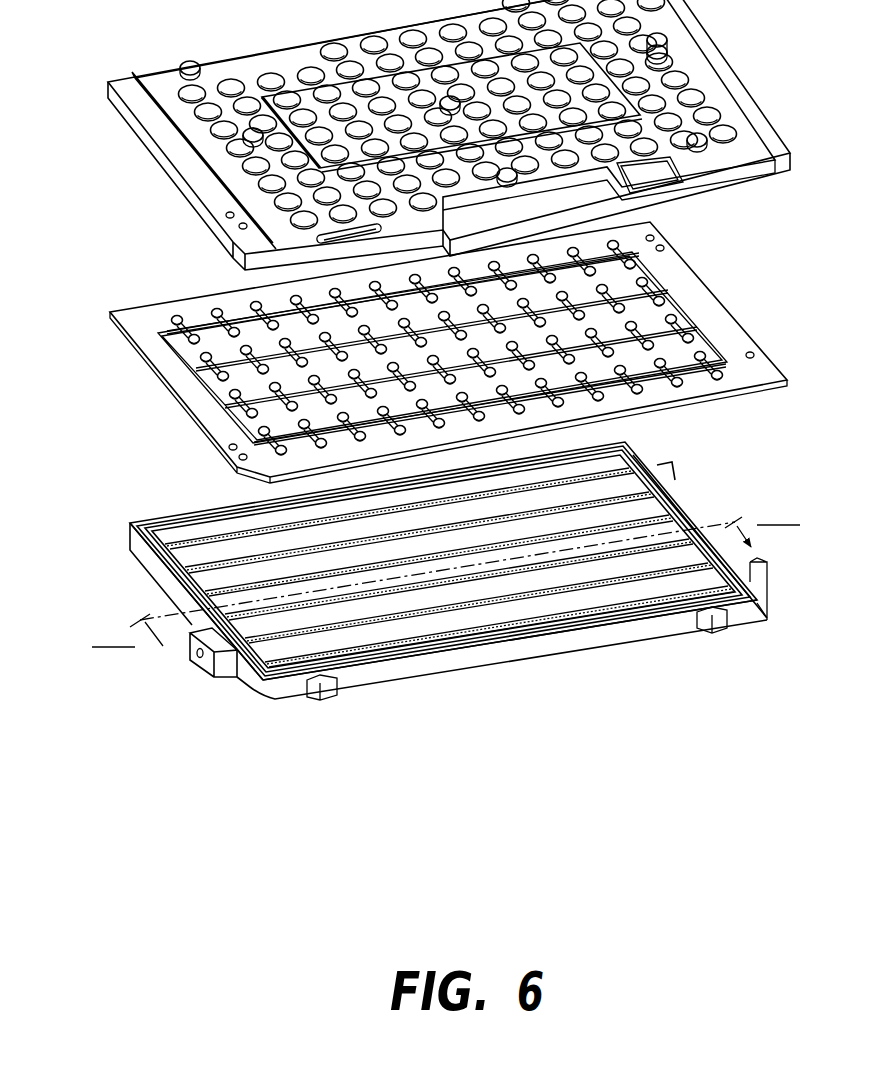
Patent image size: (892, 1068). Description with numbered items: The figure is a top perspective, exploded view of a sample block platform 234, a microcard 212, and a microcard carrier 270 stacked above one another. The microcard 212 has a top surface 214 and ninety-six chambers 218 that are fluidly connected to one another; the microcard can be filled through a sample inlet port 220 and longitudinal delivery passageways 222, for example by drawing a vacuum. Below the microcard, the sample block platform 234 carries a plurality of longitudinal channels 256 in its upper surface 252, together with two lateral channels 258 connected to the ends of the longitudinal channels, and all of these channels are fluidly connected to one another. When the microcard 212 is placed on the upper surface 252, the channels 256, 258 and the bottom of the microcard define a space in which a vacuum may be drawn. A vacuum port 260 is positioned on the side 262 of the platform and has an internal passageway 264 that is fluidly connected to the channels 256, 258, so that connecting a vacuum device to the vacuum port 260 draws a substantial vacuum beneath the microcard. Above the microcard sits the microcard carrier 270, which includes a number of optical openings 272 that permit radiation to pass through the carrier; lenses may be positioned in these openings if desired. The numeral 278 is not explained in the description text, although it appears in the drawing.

The microcard carrier 270 is at (483, 135).
The optical openings 272 is at (668, 50).
The microcard 212 is at (461, 352).
The top surface 214 is at (683, 282).
The longitudinal delivery passageways 222 is at (434, 344).
The sample inlet port 220 is at (216, 380).
The chambers 218 is at (682, 386).
The sample block platform 234 is at (434, 602).
The rim 278 is at (737, 512).
The lateral channels 258 is at (762, 573).
The side 262 is at (142, 557).
The vacuum port 260 is at (181, 693).
The internal passageway 264 is at (221, 666).
The upper surface 252 is at (362, 622).
The longitudinal channels 256 is at (473, 630).